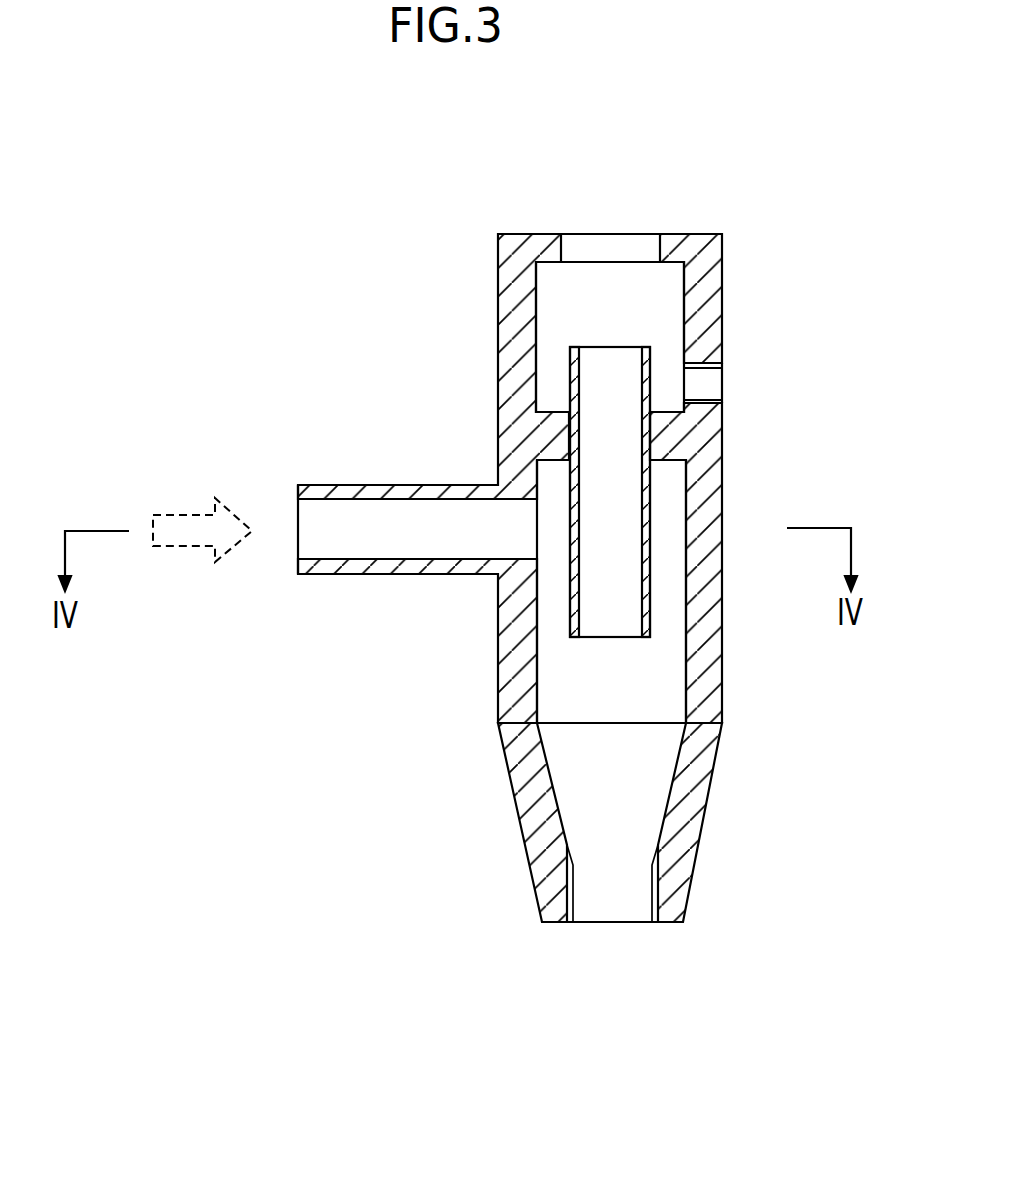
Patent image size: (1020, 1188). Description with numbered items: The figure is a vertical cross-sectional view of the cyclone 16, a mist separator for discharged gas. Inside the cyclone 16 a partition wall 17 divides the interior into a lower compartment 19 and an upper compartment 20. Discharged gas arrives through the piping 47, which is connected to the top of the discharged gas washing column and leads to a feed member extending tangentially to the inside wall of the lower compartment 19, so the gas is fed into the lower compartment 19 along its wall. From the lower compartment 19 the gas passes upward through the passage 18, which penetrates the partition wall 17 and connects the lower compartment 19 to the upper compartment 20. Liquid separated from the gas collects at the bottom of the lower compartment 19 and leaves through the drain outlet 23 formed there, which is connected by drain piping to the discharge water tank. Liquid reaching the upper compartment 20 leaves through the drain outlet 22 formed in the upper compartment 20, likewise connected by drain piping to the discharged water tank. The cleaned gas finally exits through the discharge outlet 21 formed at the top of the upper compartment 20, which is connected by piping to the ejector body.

The cyclone 16 is at (559, 575).
The partition wall 17 is at (662, 462).
The passage 18 is at (573, 365).
The lower compartment 19 is at (560, 692).
The upper compartment 20 is at (669, 283).
The discharge outlet 21 is at (606, 245).
The drain outlet 22 is at (700, 385).
The drain outlet 23 is at (613, 903).
The piping 47 is at (347, 485).